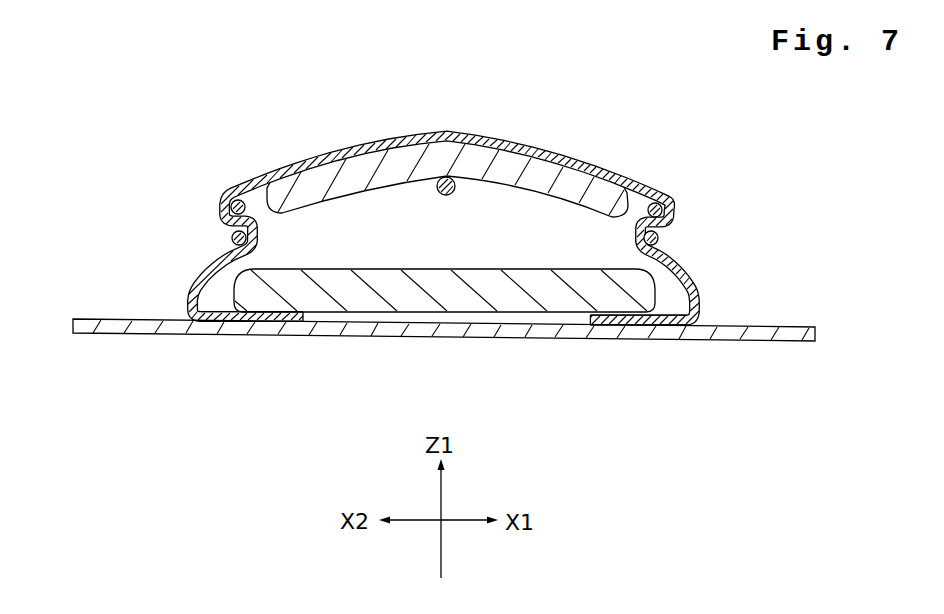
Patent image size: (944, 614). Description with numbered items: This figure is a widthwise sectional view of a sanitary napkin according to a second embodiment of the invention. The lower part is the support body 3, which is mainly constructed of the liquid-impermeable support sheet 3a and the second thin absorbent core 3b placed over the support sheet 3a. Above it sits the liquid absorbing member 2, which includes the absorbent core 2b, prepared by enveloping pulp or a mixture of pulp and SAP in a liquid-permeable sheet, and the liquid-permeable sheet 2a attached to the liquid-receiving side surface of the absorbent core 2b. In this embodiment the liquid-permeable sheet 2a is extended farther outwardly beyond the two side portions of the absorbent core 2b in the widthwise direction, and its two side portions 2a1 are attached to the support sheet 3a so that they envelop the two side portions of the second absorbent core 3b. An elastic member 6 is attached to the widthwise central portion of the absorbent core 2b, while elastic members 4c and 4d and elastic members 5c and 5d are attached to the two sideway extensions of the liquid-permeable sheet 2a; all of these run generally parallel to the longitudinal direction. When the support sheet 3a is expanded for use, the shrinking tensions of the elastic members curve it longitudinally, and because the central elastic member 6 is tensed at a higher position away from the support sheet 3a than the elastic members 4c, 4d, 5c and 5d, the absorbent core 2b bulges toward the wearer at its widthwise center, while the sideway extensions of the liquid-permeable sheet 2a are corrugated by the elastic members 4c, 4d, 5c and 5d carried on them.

The liquid absorbing member 2 is at (444, 250).
The liquid-permeable sheet 2a is at (320, 157).
The absorbent core 2b is at (517, 172).
The side portions of the liquid-permeable sheet 2a1 is at (266, 324).
The support body 3 is at (480, 314).
The support sheet 3a is at (730, 333).
The second thin absorbent core 3b is at (542, 283).
The elastic member 4c is at (673, 204).
The elastic member 4d is at (658, 241).
The elastic member 5c is at (219, 207).
The elastic member 5d is at (232, 239).
The elastic member 6 is at (448, 195).